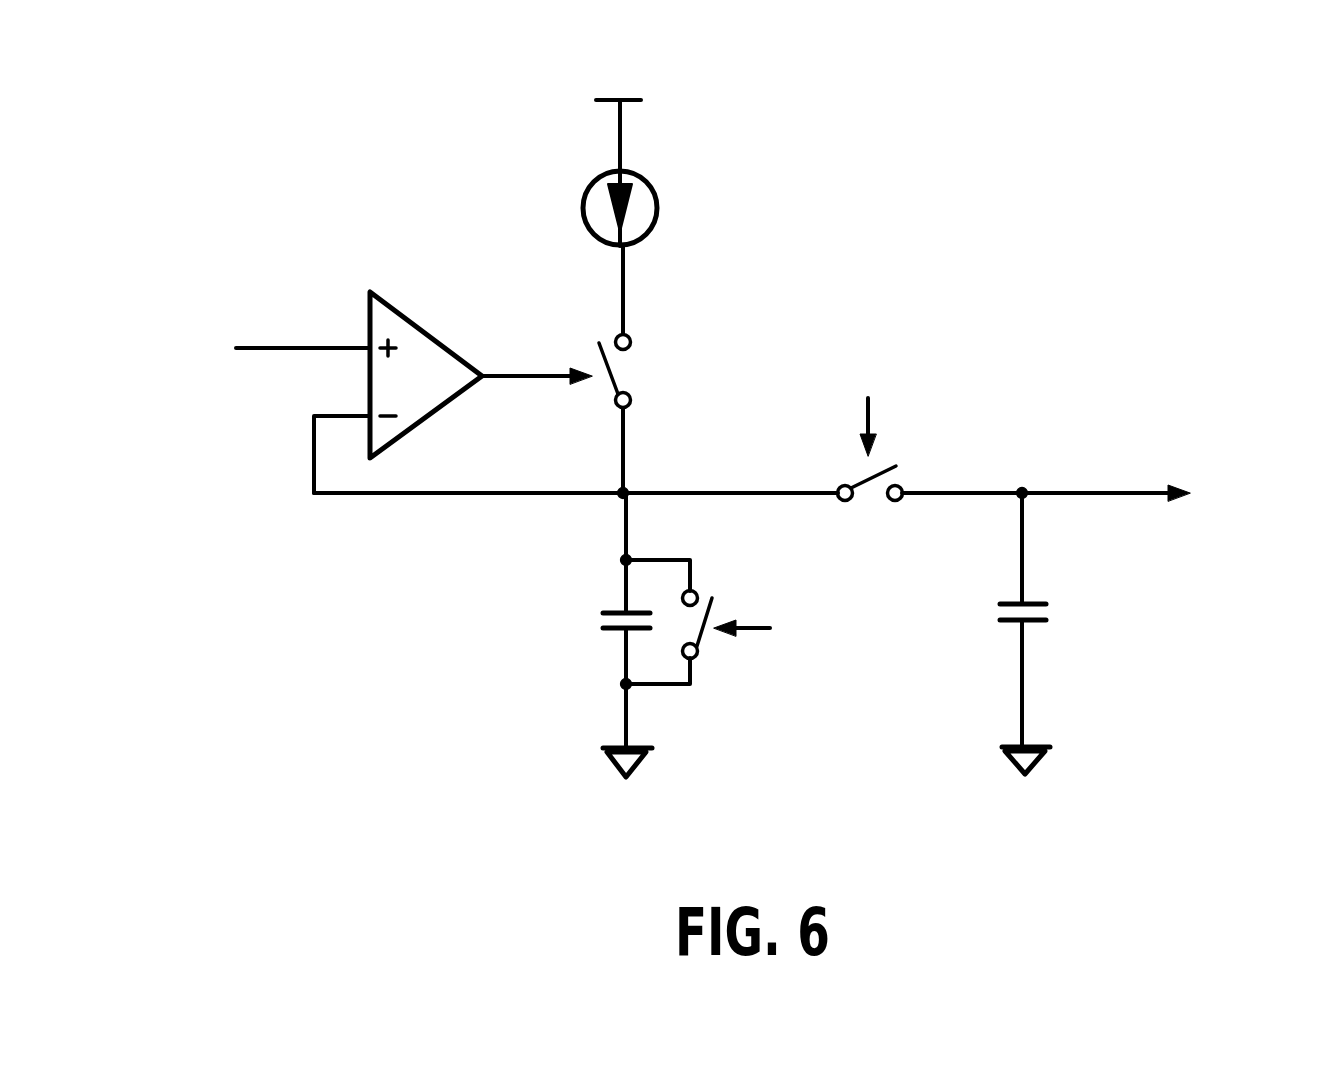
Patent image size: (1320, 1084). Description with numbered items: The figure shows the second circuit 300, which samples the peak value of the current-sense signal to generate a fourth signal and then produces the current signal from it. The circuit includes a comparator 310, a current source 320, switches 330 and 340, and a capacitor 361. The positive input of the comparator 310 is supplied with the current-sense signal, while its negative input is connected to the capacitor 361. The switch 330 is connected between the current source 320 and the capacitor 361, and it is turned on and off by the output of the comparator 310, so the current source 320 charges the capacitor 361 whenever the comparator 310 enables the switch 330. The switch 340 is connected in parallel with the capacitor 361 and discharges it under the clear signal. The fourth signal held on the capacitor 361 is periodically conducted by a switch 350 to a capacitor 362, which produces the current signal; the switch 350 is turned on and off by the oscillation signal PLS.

The second circuit 300 is at (1172, 110).
The comparator 310 is at (428, 326).
The current source 320 is at (660, 208).
The switch 330 is at (634, 371).
The switch 340 is at (703, 665).
The switch 350 is at (870, 510).
The capacitor 361 is at (598, 620).
The capacitor 362 is at (1050, 612).